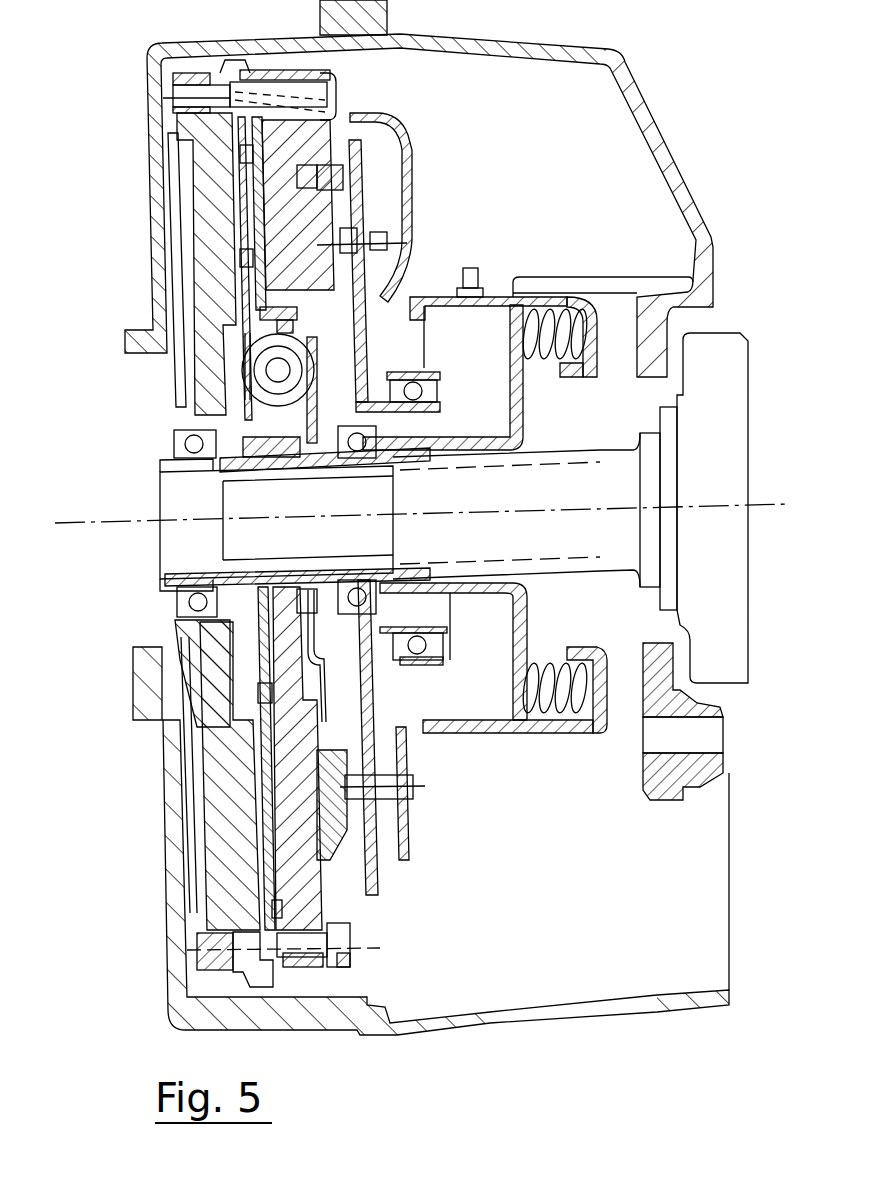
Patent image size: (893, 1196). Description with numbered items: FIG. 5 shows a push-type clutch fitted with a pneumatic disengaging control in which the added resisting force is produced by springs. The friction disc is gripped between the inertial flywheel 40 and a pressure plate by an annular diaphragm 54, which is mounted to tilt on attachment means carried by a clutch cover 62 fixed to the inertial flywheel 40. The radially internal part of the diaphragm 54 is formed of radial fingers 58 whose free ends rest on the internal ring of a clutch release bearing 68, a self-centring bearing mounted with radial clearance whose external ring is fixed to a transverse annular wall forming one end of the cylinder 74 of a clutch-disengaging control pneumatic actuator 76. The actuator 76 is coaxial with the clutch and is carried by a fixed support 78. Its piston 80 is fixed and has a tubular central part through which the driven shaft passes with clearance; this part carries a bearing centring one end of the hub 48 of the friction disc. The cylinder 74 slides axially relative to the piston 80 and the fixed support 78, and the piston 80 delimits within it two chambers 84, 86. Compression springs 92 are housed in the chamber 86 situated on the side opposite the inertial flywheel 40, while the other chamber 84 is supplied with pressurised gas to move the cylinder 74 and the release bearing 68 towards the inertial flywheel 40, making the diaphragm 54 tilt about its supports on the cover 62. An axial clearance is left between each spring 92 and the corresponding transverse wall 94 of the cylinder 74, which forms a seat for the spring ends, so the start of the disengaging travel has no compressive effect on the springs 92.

The inertial flywheel 40 is at (205, 166).
The hub 48 is at (165, 474).
The annular diaphragm 54 is at (365, 330).
The radial fingers 58 is at (350, 650).
The clutch cover 62 is at (335, 94).
The clutch release bearing 68 is at (379, 656).
The cylinder 74 is at (465, 713).
The clutch-disengaging control pneumatic actuator 76 is at (552, 737).
The fixed support 78 is at (640, 150).
The piston 80 is at (510, 624).
The chamber 84 is at (500, 335).
The chamber 86 is at (548, 362).
The compression springs 92 is at (542, 300).
The transverse wall 94 is at (599, 336).